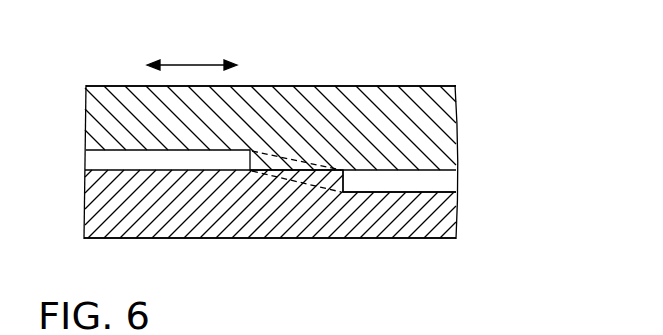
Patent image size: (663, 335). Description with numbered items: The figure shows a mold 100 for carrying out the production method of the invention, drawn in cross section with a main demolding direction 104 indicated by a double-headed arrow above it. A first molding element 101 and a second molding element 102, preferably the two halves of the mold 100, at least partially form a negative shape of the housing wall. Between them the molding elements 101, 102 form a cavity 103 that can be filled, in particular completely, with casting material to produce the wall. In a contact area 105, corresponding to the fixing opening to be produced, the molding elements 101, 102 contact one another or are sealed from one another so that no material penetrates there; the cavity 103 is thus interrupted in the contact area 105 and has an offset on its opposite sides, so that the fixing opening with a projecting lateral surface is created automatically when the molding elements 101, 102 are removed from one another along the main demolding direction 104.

The mold 100 is at (422, 73).
The first molding element 101 is at (359, 87).
The second molding element 102 is at (182, 210).
The cavity 103 is at (397, 183).
The main demolding direction 104 is at (198, 65).
The contact area 105 is at (298, 172).